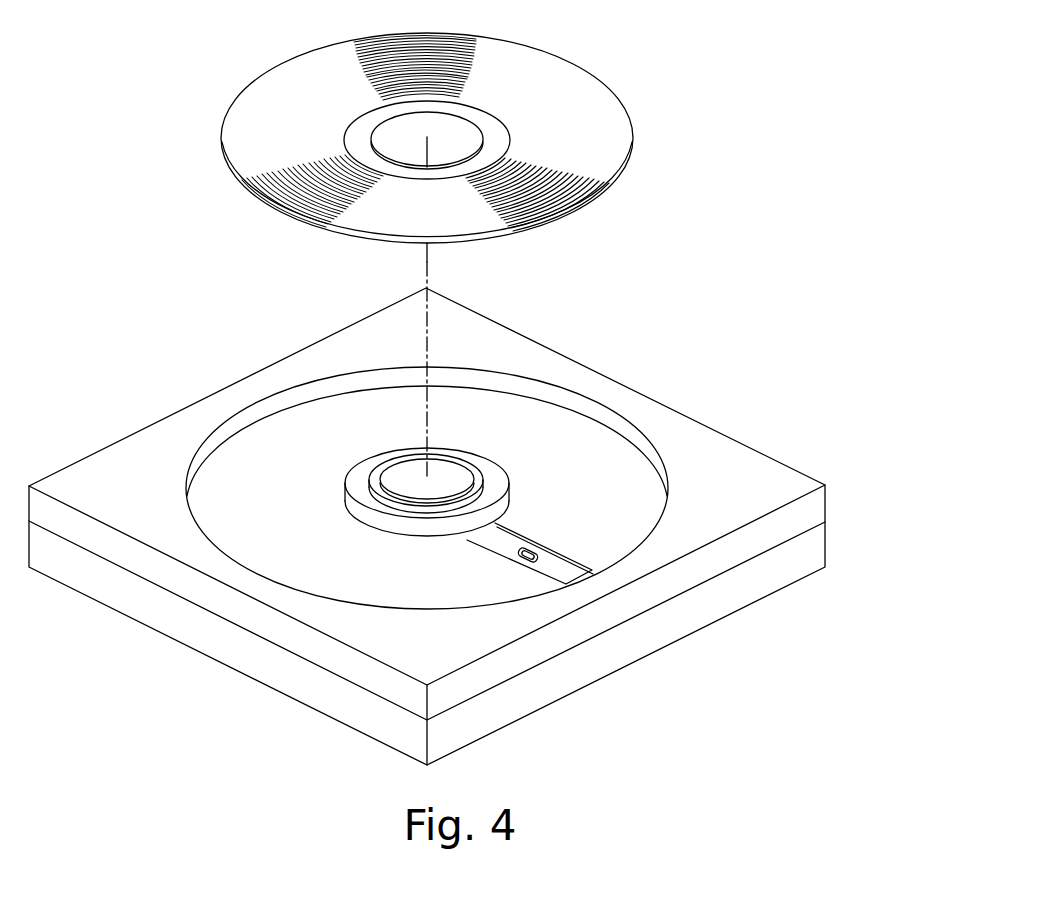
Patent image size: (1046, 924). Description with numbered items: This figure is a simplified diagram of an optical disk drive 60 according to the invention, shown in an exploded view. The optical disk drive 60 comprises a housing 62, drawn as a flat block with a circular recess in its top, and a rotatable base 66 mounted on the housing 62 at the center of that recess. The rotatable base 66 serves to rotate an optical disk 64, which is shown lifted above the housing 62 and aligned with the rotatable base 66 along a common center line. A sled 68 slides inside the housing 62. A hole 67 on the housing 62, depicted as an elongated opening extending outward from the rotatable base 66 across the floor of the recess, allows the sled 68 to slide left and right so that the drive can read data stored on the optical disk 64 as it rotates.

The optical disk drive 60 is at (451, 399).
The housing 62 is at (778, 493).
The optical disk 64 is at (598, 132).
The rotatable base 66 is at (493, 475).
The hole 67 is at (568, 549).
The sled 68 is at (513, 532).